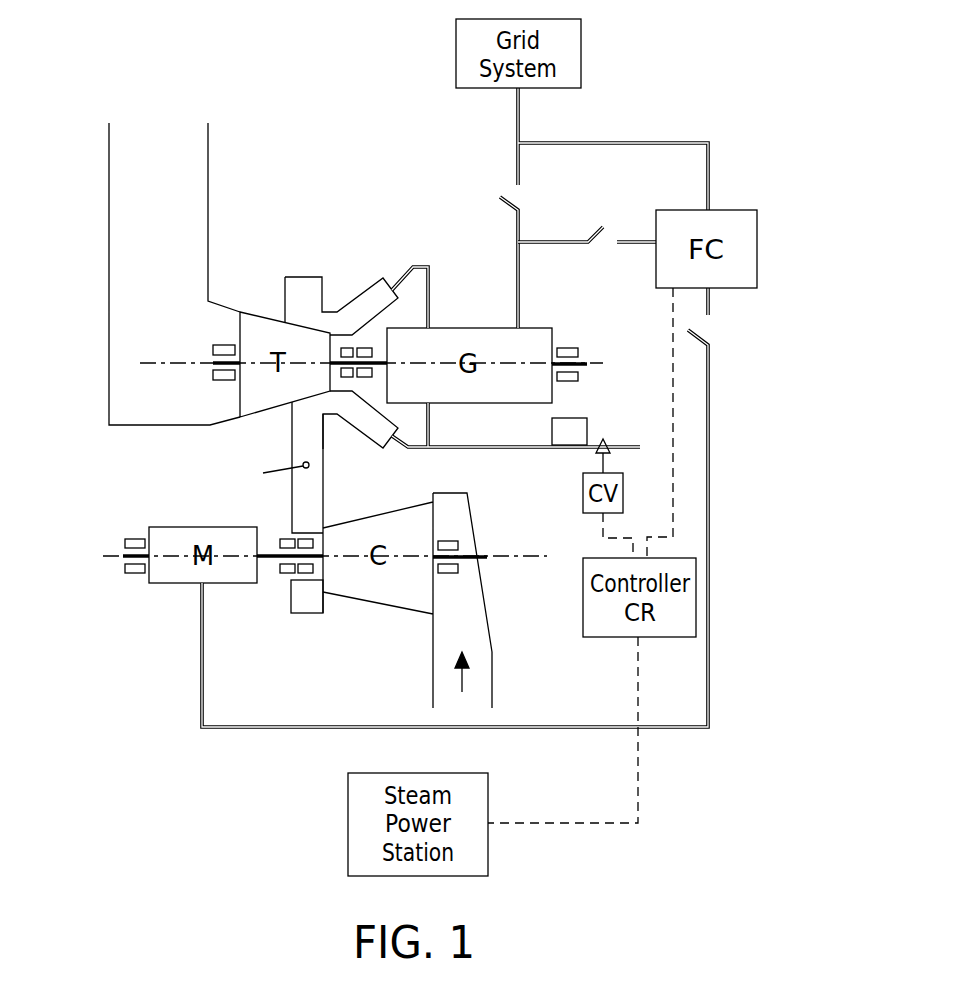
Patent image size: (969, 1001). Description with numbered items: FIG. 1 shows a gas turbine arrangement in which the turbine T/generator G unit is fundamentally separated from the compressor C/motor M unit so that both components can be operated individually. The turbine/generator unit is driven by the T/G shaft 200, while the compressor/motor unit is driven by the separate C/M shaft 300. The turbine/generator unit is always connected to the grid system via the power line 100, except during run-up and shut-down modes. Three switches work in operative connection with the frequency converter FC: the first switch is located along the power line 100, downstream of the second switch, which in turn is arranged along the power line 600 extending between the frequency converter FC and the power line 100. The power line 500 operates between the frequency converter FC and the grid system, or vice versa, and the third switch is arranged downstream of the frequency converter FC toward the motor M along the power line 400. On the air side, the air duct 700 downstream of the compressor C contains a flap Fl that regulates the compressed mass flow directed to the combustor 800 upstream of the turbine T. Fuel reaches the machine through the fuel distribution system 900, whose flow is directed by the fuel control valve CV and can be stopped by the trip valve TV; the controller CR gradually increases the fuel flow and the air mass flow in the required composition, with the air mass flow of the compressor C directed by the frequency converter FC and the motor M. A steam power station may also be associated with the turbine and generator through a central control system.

The power line 100 is at (518, 287).
The T/G shaft 200 is at (587, 364).
The C/M shaft 300 is at (487, 558).
The power line 400 is at (708, 432).
The power line 500 is at (708, 173).
The power line 600 is at (550, 242).
The air duct 700 is at (307, 503).
The combustor 800 is at (360, 307).
The fuel distribution system 900 is at (510, 450).